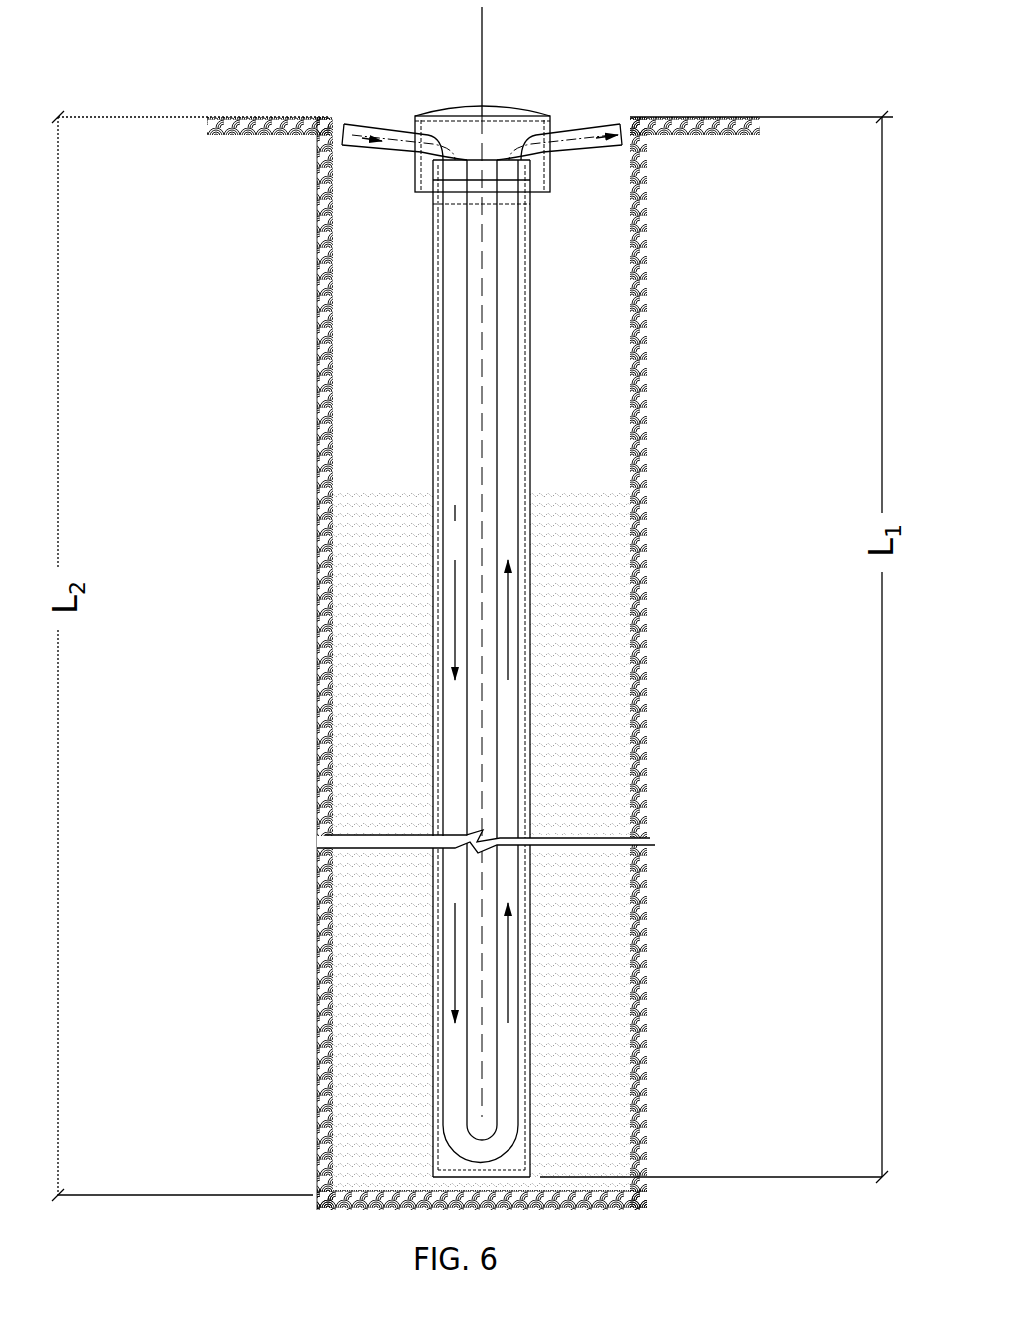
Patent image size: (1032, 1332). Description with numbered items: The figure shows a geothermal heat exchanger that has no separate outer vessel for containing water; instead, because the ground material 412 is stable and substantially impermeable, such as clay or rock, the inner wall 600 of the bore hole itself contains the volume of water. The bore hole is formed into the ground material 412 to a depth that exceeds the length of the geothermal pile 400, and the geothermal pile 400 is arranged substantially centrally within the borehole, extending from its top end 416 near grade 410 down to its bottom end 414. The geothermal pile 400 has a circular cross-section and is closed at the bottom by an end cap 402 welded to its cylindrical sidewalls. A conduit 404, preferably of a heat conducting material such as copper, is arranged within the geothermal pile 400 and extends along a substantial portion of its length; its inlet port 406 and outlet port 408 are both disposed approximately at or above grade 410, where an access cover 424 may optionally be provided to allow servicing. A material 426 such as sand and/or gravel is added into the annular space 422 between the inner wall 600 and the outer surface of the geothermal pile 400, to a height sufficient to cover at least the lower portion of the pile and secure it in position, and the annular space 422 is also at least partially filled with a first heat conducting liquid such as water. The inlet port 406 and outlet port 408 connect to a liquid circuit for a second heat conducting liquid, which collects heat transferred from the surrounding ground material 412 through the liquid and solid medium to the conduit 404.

The geothermal pile 400 is at (535, 677).
The end cap 402 is at (377, 1110).
The conduit 404 is at (590, 585).
The inlet port 406 is at (372, 155).
The outlet port 408 is at (597, 152).
The grade 410 is at (676, 117).
The ground material 412 is at (747, 663).
The bottom end of the pile 414 is at (309, 841).
The top end of the pile 416 is at (203, 663).
The annular space 422 is at (550, 583).
The access cover 424 is at (467, 105).
The material 426 is at (560, 1088).
The inner wall of the bore hole 600 is at (330, 452).